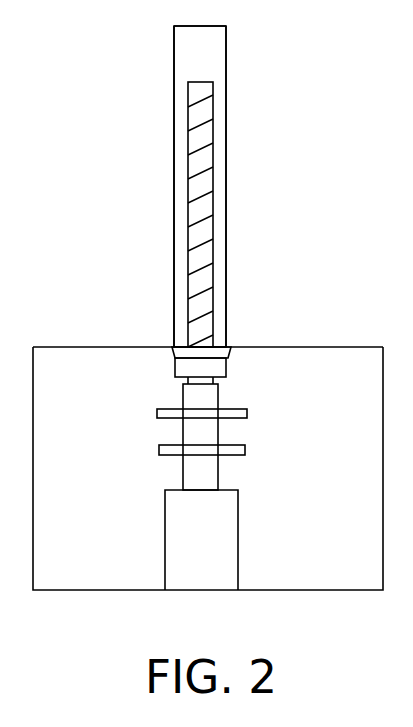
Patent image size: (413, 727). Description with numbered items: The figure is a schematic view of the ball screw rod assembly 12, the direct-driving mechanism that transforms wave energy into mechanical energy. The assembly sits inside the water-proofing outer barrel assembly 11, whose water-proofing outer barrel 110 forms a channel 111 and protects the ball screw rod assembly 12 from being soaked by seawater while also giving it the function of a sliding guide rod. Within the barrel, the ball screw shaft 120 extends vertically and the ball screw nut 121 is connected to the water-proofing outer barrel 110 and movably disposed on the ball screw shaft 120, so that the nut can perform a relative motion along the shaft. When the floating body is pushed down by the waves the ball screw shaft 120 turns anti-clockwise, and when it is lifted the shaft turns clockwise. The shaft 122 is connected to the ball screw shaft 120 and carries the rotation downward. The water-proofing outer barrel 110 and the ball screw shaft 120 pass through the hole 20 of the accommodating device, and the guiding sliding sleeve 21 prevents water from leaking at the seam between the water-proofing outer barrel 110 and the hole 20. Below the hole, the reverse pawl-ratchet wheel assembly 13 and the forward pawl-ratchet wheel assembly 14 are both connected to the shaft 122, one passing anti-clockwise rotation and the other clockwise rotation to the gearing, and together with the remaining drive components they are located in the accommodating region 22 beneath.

The water-proofing outer barrel assembly 11 is at (103, 38).
The water-proofing outer barrel 110 is at (174, 41).
The channel 111 is at (187, 64).
The ball screw rod assembly 12 is at (112, 185).
The ball screw shaft 120 is at (188, 199).
The ball screw nut 121 is at (175, 363).
The shaft 122 is at (183, 388).
The hole 20 is at (227, 346).
The guiding sliding sleeve 21 is at (231, 350).
The reverse pawl-ratchet wheel assembly 13 is at (247, 413).
The forward pawl-ratchet wheel assembly 14 is at (245, 450).
The accommodating region 22 is at (93, 567).